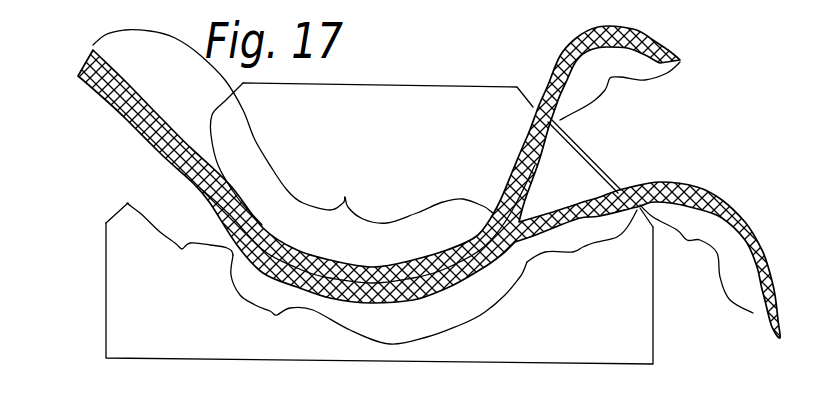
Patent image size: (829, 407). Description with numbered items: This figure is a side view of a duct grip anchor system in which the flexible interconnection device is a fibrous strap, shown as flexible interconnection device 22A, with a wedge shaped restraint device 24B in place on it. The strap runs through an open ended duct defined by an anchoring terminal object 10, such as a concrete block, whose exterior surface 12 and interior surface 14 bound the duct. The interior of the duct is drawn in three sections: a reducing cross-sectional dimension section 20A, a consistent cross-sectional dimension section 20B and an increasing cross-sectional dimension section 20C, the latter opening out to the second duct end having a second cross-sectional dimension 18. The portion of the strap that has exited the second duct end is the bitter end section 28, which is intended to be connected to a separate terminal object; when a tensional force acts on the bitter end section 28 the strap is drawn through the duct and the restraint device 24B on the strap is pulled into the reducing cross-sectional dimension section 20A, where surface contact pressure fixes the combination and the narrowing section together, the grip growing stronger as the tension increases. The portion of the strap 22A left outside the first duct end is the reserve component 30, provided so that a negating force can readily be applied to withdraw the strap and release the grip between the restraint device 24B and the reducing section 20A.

The anchoring terminal object 10 is at (420, 153).
The exterior surface 12 is at (530, 86).
The interior surface 14 is at (170, 162).
The second cross-sectional dimension 18 is at (197, 128).
The reducing cross-sectional dimension section 20A is at (582, 252).
The consistent cross-sectional dimension section 20B is at (379, 302).
The increasing cross-sectional dimension section 20C is at (180, 241).
The flexible interconnection device 22A is at (160, 183).
The wedge shaped restraint device 24B is at (563, 173).
The bitter end section 28 is at (293, 127).
The reserve component 30 is at (656, 187).